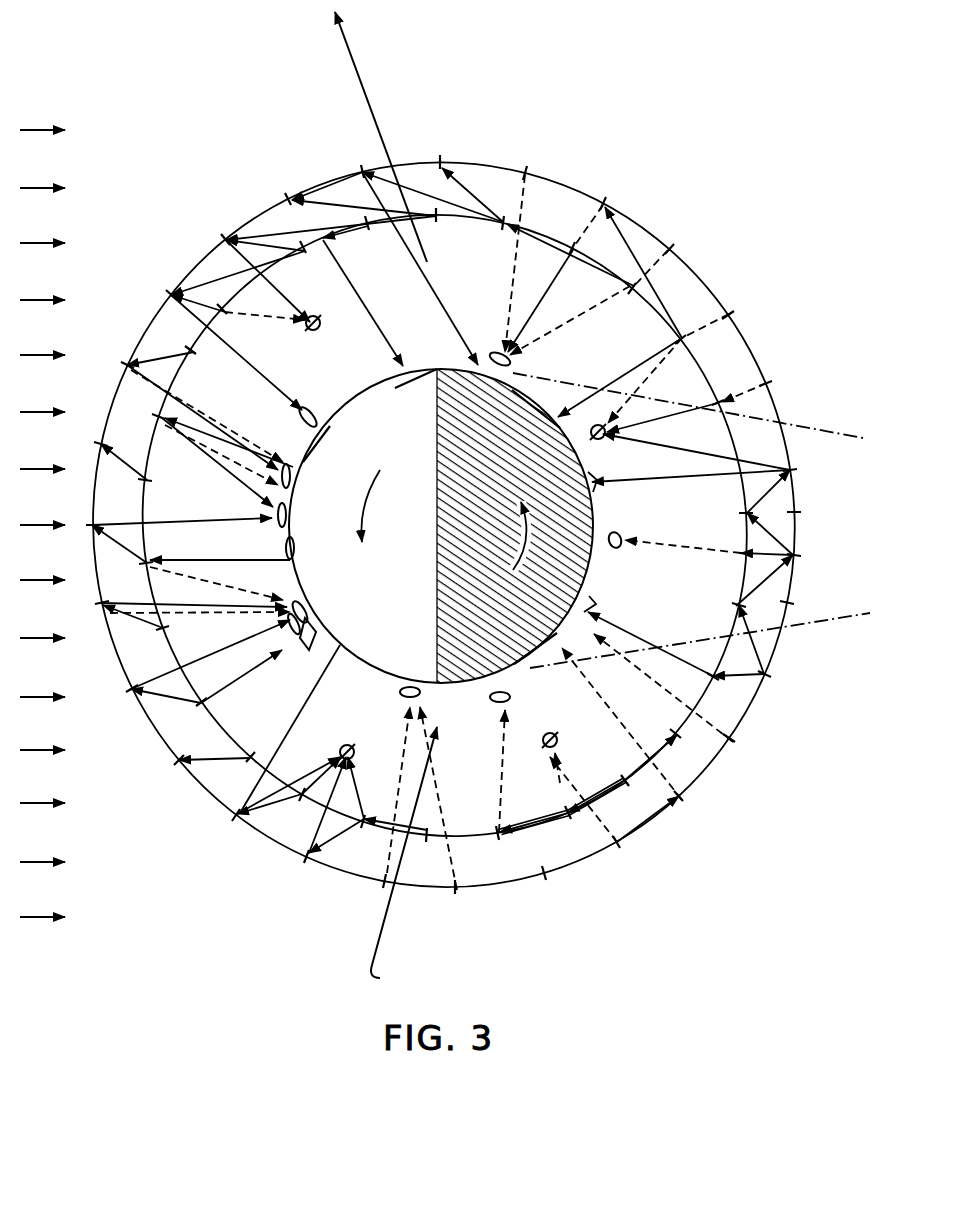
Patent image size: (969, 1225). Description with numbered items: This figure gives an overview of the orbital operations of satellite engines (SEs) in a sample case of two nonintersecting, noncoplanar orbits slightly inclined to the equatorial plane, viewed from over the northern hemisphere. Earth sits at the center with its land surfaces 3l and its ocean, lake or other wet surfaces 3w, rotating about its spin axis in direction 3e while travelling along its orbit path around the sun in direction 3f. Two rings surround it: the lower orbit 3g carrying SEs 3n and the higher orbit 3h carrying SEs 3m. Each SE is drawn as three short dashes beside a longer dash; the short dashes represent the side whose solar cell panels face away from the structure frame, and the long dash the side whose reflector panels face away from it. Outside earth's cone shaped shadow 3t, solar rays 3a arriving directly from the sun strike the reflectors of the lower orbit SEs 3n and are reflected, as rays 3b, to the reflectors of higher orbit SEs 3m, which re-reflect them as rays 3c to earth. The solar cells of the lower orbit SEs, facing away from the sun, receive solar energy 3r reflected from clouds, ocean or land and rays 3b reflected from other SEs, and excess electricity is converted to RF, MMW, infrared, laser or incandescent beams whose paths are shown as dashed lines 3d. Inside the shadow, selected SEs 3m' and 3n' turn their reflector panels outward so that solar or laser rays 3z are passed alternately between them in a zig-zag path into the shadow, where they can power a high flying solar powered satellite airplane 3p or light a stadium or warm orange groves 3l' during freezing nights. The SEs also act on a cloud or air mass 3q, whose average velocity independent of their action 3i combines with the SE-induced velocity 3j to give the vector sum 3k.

The solar rays directly from the sun 3a is at (42, 523).
The once-reflected solar rays 3b is at (428, 510).
The twice-reflected solar rays 3c is at (429, 512).
The energy beam path 3d is at (425, 531).
The earth's direction of rotation 3e is at (441, 526).
The direction of earth's orbit path 3f is at (386, 499).
The lower orbit 3g is at (500, 503).
The higher orbit 3h is at (485, 502).
The average velocity vector of an air mass independent of SE actions 3i is at (286, 629).
The average velocity vector of an air mass induced by SE actions 3j is at (314, 637).
The vector sum 3k is at (290, 729).
The earth's land surfaces 3l is at (416, 368).
The illuminated sports stadium or orange groves 3l' is at (601, 542).
The SE in higher orbit 3m is at (446, 524).
The selected SE in higher orbit in earth shadow 3m' is at (801, 583).
The SE on lower orbit 3n is at (444, 526).
The selected SE in lower orbit in earth shadow 3n' is at (732, 559).
The solar powered satellite airplane 3p is at (455, 537).
The cloud or air mass 3q is at (454, 529).
The reflection of solar energy back to space 3r is at (221, 484).
The earth's cone shaped shadow 3t is at (691, 522).
The earth's ocean, lake or other wet surface 3w is at (445, 524).
The solar rays reflecting alternately between shadowed SEs 3z is at (692, 504).